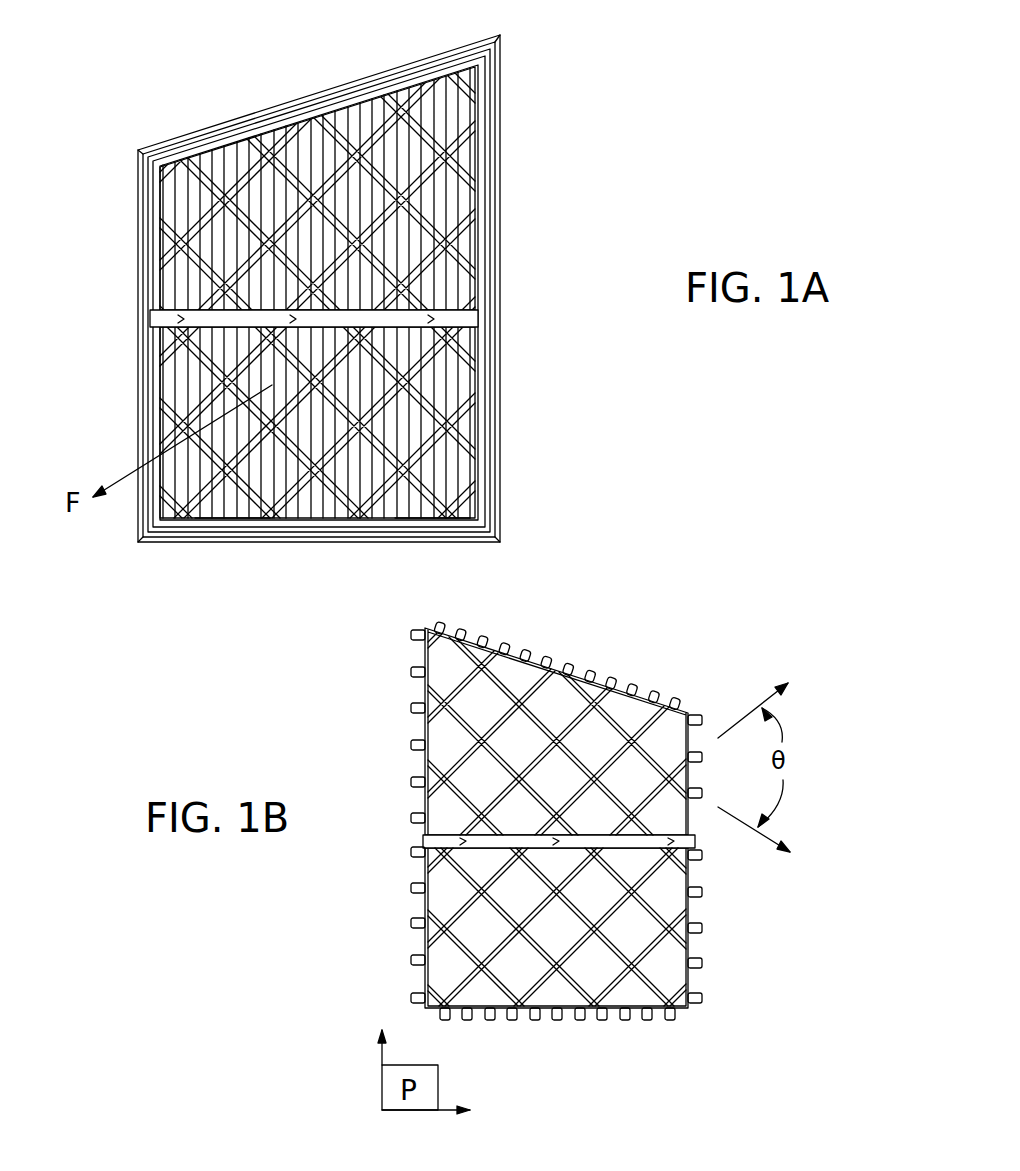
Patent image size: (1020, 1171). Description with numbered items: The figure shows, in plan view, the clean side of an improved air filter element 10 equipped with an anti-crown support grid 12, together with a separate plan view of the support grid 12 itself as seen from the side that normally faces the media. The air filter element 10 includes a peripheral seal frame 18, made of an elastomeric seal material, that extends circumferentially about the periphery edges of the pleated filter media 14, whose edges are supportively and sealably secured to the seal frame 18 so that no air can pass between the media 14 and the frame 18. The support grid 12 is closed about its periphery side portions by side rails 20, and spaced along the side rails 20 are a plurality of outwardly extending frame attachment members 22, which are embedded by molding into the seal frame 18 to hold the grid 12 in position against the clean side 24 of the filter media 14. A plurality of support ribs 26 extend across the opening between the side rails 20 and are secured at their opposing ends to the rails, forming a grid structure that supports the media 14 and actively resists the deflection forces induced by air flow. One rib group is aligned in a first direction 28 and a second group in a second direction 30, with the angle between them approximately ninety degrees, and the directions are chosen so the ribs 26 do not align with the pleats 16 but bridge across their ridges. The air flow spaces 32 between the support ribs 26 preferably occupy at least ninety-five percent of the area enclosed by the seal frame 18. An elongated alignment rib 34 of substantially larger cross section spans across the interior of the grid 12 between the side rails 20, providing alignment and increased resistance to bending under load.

In FIG. 1A, the air filter element 10 is at (118, 105).
In FIG. 1A, the anti-crown support grid 12 is at (472, 208).
In FIG. 1B, the anti-crown support grid 12 is at (727, 638).
In FIG. 1A, the pleated filter media 14 is at (228, 150).
In FIG. 1A, the pleats 16 is at (190, 207).
In FIG. 1A, the peripheral seal frame 18 is at (500, 58).
In FIG. 1A, the side rails 20 is at (213, 515).
In FIG. 1B, the side rails 20 is at (418, 900).
In FIG. 1B, the frame attachment members 22 is at (645, 1018).
In FIG. 1A, the clean side 24 is at (108, 318).
In FIG. 1A, the support ribs 26 is at (440, 190).
In FIG. 1B, the support ribs 26 is at (618, 945).
In FIG. 1B, the first direction 28 is at (775, 692).
In FIG. 1B, the second direction 30 is at (787, 827).
In FIG. 1B, the air flow spaces 32 is at (480, 697).
In FIG. 1A, the elongated alignment rib 34 is at (455, 316).